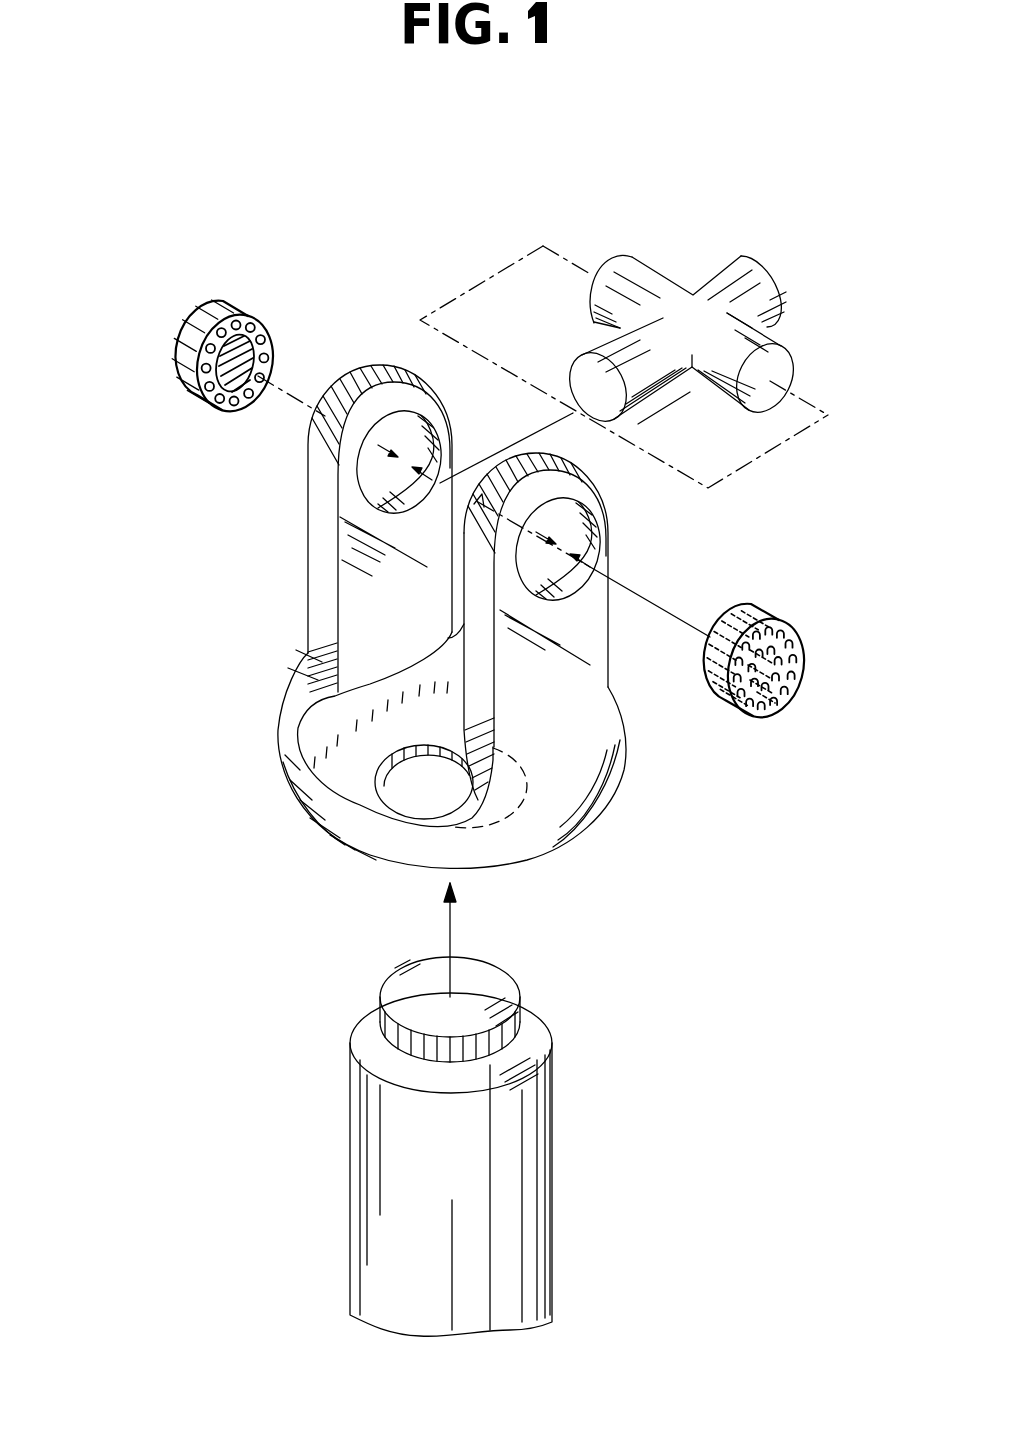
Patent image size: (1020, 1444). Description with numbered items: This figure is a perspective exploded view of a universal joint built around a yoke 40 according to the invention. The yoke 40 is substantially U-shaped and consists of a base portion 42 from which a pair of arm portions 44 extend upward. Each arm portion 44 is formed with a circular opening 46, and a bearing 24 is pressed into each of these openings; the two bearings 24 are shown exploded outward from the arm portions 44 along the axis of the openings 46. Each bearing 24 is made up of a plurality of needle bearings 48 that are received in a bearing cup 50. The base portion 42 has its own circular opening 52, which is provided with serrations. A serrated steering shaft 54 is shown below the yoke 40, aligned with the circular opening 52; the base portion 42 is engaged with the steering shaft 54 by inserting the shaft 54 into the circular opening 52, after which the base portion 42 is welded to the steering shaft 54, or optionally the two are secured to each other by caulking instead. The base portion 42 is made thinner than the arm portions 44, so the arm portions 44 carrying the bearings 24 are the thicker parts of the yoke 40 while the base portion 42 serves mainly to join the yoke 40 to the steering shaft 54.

The bearing 24 is at (237, 312).
The yoke 40 is at (220, 670).
The base portion 42 is at (555, 838).
The arm portions 44 is at (316, 546).
The circular opening 46 is at (440, 483).
The needle bearings 48 is at (257, 353).
The bearing cup 50 is at (177, 398).
The circular opening 52 is at (390, 793).
The steering shaft 54 is at (530, 1140).